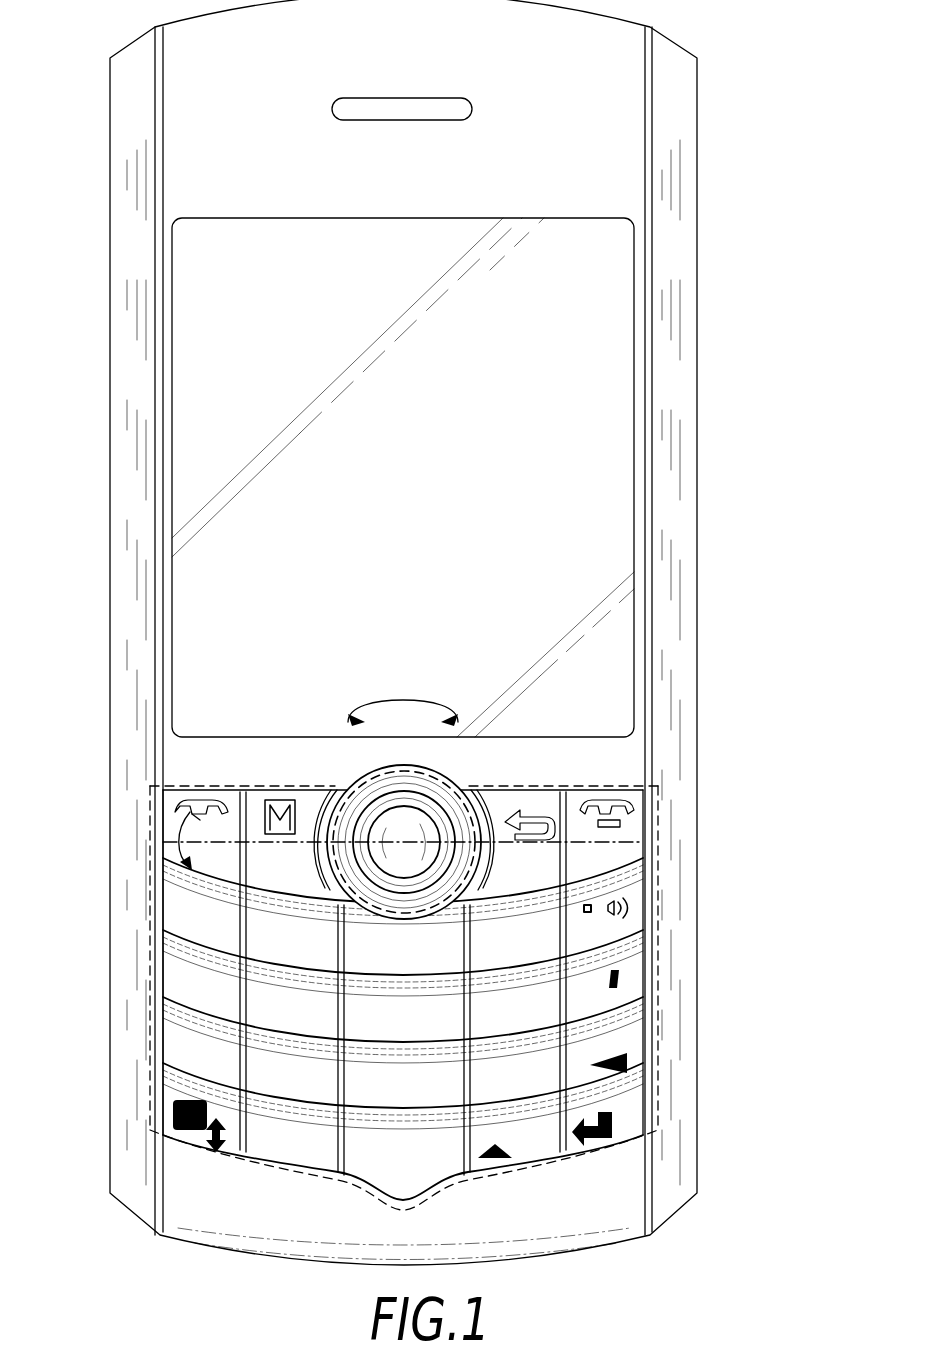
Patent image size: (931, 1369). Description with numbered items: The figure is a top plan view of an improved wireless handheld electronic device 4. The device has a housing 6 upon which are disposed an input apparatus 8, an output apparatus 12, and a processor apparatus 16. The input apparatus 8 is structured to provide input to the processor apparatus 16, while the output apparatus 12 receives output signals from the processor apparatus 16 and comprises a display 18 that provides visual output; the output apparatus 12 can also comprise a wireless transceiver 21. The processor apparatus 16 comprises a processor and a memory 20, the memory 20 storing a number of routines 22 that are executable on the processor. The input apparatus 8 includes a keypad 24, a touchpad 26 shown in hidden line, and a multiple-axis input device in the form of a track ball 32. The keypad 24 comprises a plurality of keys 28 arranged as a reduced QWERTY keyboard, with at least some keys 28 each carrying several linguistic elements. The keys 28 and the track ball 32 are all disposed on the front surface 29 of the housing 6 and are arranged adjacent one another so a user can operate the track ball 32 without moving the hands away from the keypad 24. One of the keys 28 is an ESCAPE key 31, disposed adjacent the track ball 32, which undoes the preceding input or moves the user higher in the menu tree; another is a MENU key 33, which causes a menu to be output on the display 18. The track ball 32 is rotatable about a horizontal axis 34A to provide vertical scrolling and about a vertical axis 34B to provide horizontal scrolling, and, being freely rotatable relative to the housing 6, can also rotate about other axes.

The handheld electronic device 4 is at (730, 76).
The housing 6 is at (697, 162).
The input apparatus 8 is at (135, 870).
The output apparatus 12 is at (660, 605).
The processor apparatus 16 is at (173, 748).
The display 18 is at (606, 386).
The memory 20 is at (173, 755).
The wireless transceiver 21 is at (173, 760).
The routines 22 is at (173, 768).
The keypad 24 is at (662, 970).
The touchpad 26 is at (610, 783).
The keys 28 is at (165, 908).
The front surface 29 is at (632, 757).
The ESCAPE key 31 is at (530, 800).
The track ball 32 is at (428, 800).
The MENU key 33 is at (262, 790).
The horizontal axis 34A is at (305, 808).
The vertical axis 34B is at (404, 930).